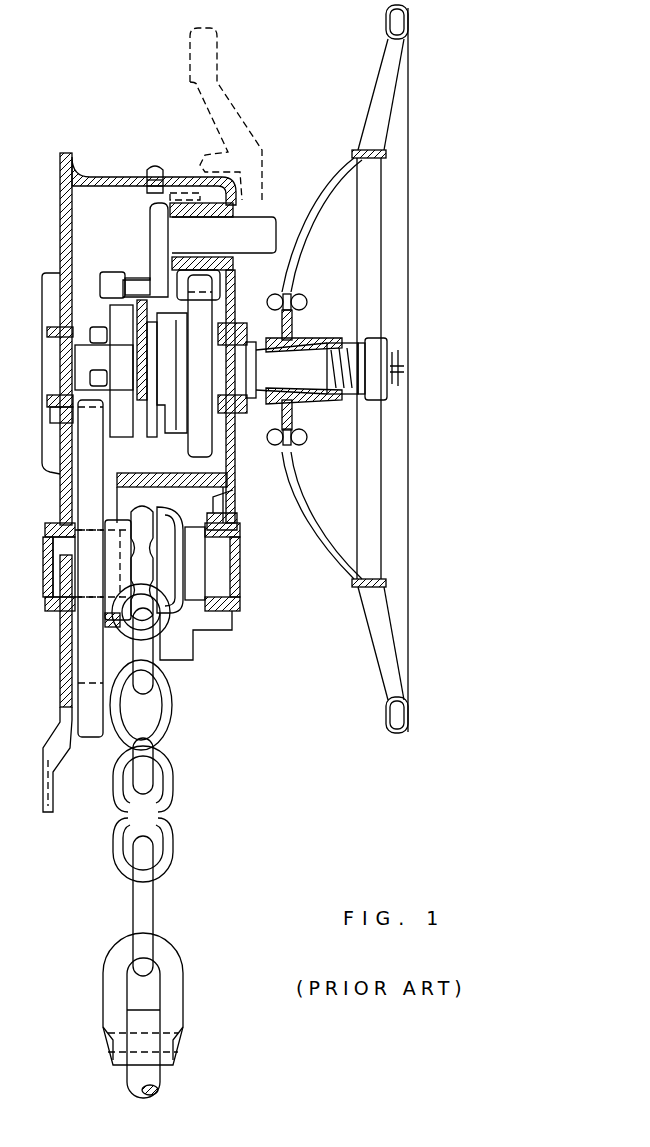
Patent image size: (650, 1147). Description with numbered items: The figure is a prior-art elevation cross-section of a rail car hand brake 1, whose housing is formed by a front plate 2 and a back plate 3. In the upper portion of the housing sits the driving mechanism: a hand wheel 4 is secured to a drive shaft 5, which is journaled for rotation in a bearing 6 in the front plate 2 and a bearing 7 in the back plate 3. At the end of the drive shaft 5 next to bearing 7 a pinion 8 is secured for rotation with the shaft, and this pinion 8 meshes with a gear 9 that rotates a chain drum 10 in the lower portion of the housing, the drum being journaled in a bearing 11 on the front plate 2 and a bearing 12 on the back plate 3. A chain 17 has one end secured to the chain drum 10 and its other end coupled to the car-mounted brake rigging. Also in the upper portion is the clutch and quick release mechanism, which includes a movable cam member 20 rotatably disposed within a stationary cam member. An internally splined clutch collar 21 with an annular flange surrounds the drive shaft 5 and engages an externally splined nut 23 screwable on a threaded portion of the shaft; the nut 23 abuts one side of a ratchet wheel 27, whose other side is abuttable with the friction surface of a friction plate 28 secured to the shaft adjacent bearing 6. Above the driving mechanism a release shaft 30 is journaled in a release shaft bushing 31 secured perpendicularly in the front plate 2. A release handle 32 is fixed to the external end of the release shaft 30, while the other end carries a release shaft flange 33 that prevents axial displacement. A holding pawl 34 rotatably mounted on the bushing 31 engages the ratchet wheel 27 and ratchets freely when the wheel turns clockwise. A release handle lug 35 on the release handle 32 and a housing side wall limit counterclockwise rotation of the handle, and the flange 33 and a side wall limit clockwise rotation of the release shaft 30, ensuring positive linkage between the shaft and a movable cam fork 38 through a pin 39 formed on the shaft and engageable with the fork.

The hand brake 1 is at (113, 173).
The front plate 2 is at (236, 482).
The back plate 3 is at (60, 487).
The hand wheel 4 is at (377, 92).
The drive shaft 5 is at (318, 362).
The bearing 6 is at (232, 400).
The bearing 7 is at (75, 395).
The pinion 8 is at (56, 388).
The gear 9 is at (95, 667).
The chain drum 10 is at (178, 608).
The bearing 11 is at (232, 583).
The bearing 12 is at (50, 583).
The chain 17 is at (165, 835).
The movable cam member 20 is at (112, 312).
The clutch collar 21 is at (147, 305).
The nut 23 is at (175, 412).
The ratchet wheel 27 is at (222, 318).
The friction plate 28 is at (233, 450).
The release shaft 30 is at (232, 252).
The release shaft bushing 31 is at (224, 235).
The release handle 32 is at (203, 44).
The release shaft flange 33 is at (156, 222).
The holding pawl 34 is at (180, 260).
The release handle lug 35 is at (214, 160).
The movable cam fork 38 is at (116, 274).
The pin 39 is at (138, 280).